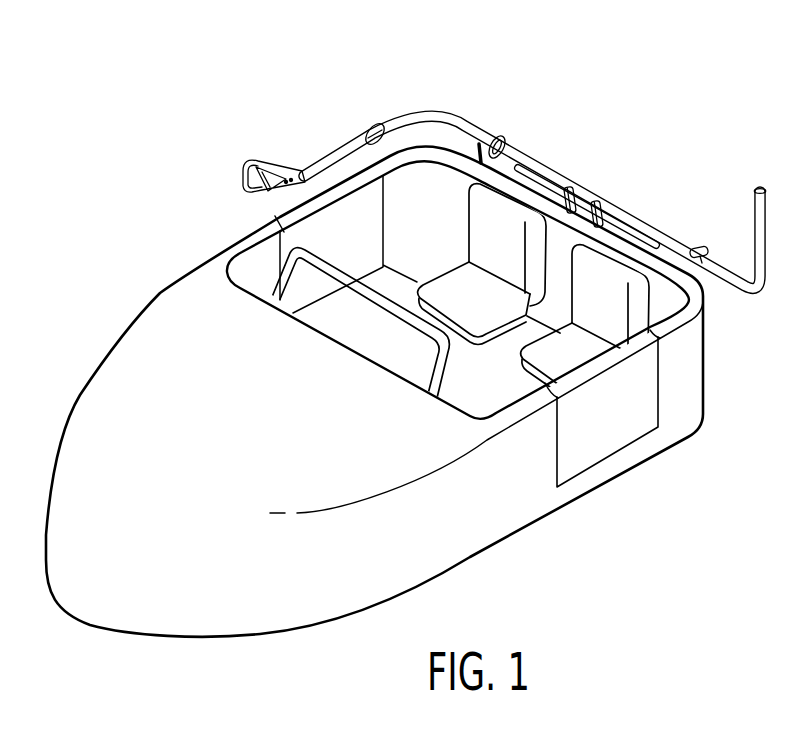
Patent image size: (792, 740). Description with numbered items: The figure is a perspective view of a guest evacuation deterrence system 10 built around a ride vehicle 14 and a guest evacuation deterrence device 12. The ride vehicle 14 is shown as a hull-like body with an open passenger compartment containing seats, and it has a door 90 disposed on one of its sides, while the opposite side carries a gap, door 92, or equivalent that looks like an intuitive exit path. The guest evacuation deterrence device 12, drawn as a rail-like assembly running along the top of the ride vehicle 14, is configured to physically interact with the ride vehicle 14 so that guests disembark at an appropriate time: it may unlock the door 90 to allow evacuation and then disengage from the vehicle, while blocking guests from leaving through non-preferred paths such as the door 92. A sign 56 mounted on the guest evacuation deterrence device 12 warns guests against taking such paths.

The guest evacuation deterrence system 10 is at (178, 74).
The guest evacuation deterrence device 12 is at (628, 152).
The ride vehicle 14 is at (626, 507).
The sign 56 is at (372, 122).
The door 90 is at (637, 393).
The door 92 is at (290, 220).